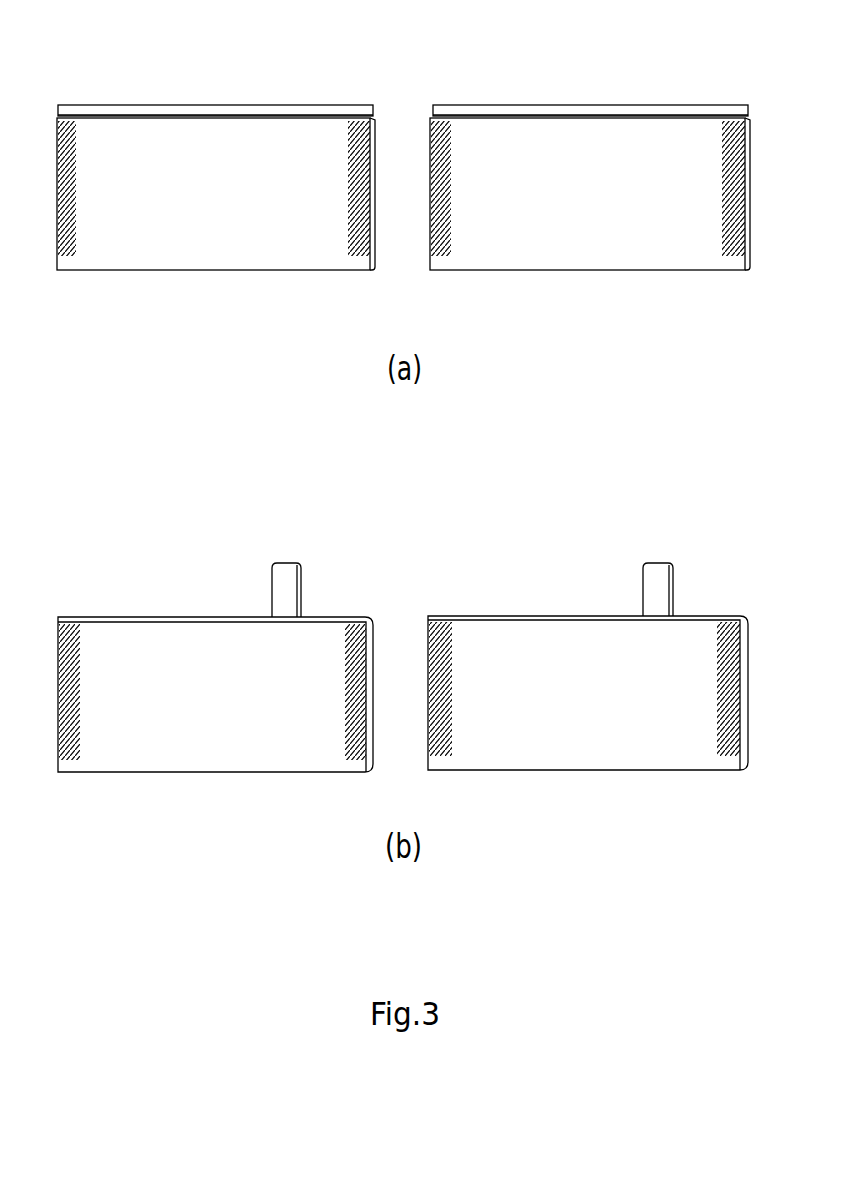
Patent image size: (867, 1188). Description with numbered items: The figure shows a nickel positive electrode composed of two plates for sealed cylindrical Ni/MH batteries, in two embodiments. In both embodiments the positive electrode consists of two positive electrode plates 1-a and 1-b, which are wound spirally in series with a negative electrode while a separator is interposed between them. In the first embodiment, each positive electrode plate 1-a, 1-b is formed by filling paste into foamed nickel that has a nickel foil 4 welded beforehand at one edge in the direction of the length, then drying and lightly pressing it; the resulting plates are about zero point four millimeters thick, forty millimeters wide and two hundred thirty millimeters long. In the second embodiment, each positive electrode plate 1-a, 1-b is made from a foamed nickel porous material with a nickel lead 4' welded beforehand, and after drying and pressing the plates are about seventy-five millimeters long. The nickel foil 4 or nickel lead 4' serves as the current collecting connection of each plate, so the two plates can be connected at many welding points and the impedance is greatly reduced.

The positive electrode plate 1-a is at (130, 147).
The positive electrode plate 1-b is at (532, 142).
The nickel foil 4 is at (410, 68).
The nickel lead 4' is at (512, 557).